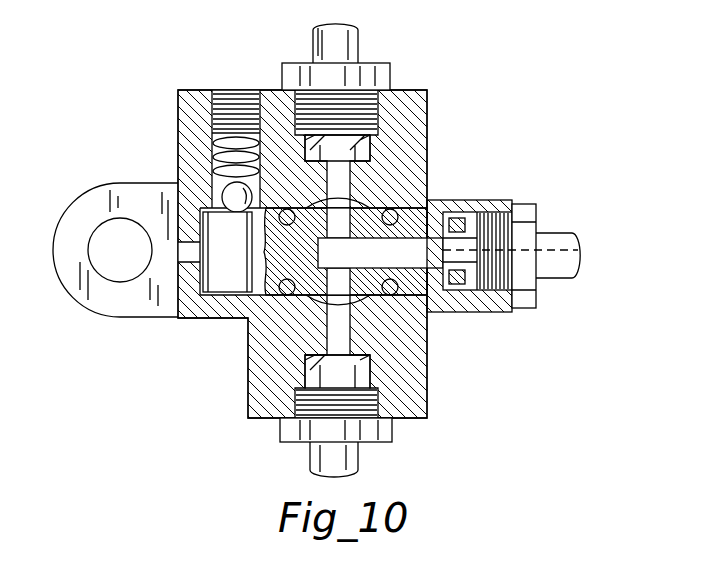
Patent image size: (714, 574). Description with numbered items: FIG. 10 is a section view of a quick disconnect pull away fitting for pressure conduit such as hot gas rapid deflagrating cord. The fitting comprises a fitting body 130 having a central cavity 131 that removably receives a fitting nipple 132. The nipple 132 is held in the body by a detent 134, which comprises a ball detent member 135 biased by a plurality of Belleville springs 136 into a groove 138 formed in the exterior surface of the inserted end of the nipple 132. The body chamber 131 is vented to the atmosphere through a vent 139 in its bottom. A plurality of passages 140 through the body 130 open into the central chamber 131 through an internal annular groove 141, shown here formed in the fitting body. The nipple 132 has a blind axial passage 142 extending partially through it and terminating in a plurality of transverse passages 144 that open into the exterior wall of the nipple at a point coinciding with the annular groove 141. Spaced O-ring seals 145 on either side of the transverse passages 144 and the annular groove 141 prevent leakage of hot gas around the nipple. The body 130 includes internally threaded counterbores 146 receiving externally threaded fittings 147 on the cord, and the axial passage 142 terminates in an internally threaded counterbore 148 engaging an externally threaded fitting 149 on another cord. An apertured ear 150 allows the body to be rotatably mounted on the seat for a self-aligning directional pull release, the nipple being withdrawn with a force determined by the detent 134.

The fitting body 130 is at (428, 112).
The central cavity 131 is at (445, 215).
The fitting nipple 132 is at (430, 300).
The detent 134 is at (213, 185).
The ball detent member 135 is at (230, 198).
The Belleville springs 136 is at (210, 165).
The groove 138 is at (240, 300).
The vent 139 is at (190, 252).
The passages 140 is at (345, 188).
The internal annular groove 141 is at (402, 372).
The blind axial passage 142 is at (456, 212).
The transverse passages 144 is at (307, 180).
The O-ring seals 145 is at (396, 212).
The internally threaded counterbores 146 is at (372, 90).
The externally threaded fittings 147 is at (340, 42).
The internally threaded counterbore 148 is at (540, 236).
The externally threaded fitting 149 is at (556, 240).
The apertured ear 150 is at (98, 300).